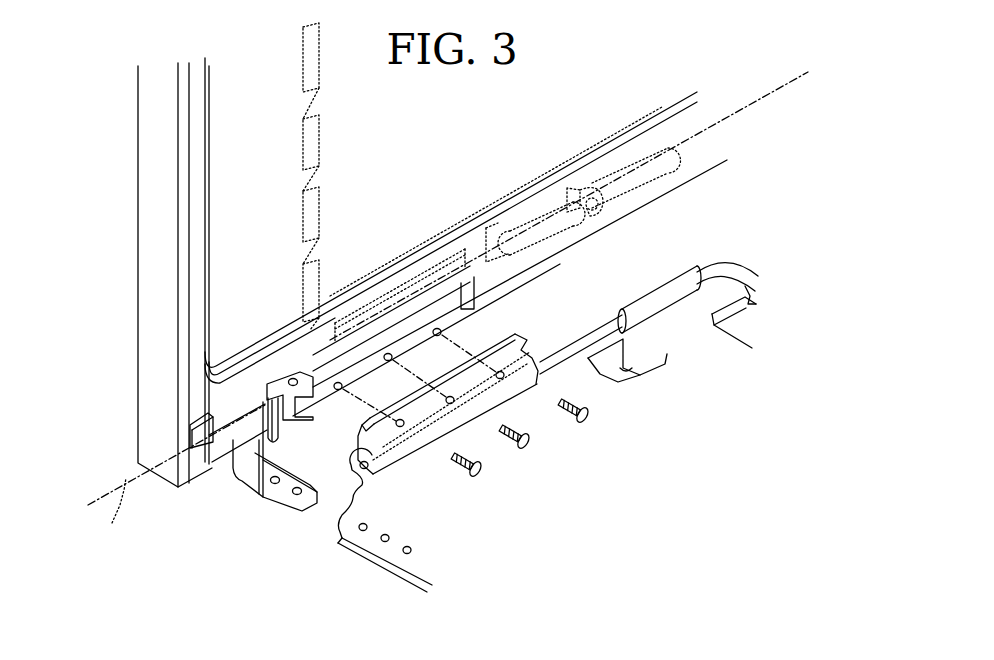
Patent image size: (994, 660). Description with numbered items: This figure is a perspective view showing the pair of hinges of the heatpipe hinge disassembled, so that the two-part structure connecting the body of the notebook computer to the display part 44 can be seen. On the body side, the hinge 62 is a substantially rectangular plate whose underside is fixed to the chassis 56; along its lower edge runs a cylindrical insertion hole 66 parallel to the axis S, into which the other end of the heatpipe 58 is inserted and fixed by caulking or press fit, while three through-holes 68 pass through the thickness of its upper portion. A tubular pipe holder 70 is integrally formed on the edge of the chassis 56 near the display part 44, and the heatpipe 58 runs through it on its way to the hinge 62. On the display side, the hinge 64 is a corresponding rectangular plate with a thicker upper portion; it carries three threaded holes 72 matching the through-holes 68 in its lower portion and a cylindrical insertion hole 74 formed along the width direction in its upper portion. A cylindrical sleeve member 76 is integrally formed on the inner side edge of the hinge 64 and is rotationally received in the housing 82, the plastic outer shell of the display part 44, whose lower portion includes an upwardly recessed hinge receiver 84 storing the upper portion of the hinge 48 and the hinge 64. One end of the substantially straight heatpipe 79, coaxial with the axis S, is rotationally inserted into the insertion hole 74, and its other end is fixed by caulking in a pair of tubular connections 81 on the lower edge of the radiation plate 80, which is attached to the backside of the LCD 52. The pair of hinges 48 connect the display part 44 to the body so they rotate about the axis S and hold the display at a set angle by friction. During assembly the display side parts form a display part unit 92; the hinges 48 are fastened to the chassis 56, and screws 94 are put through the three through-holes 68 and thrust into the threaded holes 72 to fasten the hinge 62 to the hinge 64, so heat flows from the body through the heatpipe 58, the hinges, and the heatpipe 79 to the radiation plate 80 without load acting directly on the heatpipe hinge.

The display part 44 is at (137, 452).
The hinges 48 is at (240, 473).
The liquid crystal display part (LCD) 52 is at (225, 152).
The chassis 56 is at (386, 574).
The heatpipe 58 is at (746, 263).
The hinge 62 is at (525, 348).
The hinge 64 is at (362, 333).
The insertion hole 66 is at (352, 483).
The through-holes 68 is at (502, 379).
The pipe holder 70 is at (646, 305).
The threaded holes 72 is at (442, 332).
The insertion hole 74 is at (283, 378).
The sleeve member 76 is at (465, 265).
The heatpipe 79 is at (572, 185).
The radiation plate 80 is at (303, 135).
The connections 81 is at (640, 195).
The housing 82 is at (158, 220).
The hinge receiver 84 is at (282, 398).
The display part unit 92 is at (201, 492).
The screws 94 is at (590, 421).
The axis S is at (176, 472).